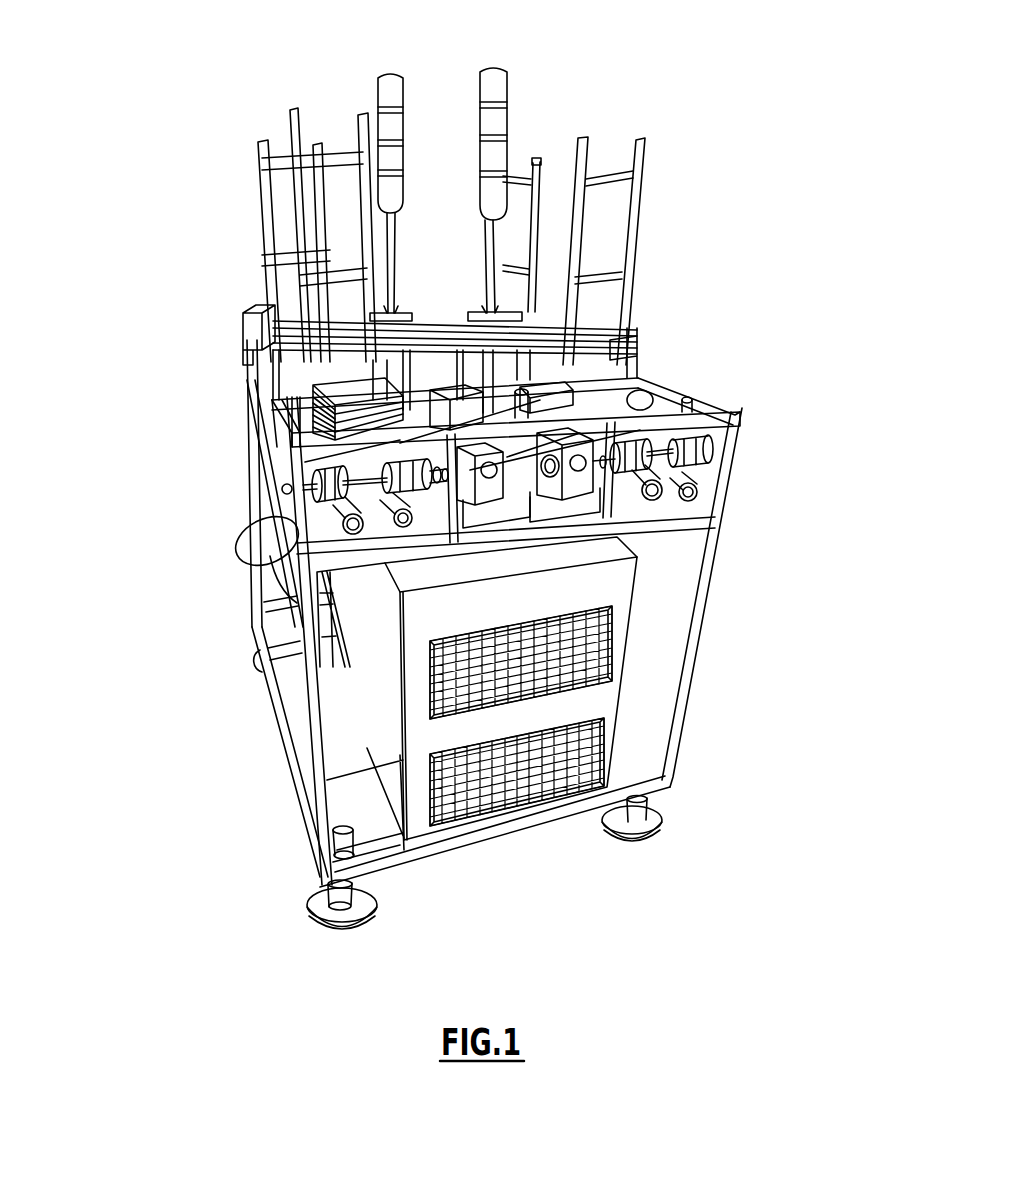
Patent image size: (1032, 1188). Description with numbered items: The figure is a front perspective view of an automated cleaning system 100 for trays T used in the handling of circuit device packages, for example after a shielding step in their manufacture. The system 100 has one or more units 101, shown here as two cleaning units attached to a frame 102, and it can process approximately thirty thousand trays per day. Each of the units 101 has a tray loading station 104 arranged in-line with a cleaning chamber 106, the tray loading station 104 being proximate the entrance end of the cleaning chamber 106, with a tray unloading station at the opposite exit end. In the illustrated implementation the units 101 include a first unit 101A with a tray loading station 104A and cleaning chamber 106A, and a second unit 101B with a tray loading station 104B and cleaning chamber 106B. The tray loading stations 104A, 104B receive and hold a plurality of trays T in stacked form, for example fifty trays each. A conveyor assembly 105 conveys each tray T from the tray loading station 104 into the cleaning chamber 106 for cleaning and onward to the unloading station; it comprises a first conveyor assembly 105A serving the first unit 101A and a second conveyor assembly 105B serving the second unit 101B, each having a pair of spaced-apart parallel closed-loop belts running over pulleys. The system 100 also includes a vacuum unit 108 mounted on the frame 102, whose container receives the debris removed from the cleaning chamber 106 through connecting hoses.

The automated cleaning system 100 is at (828, 73).
The units 101 is at (808, 226).
The first unit 101A is at (652, 214).
The second unit 101B is at (230, 201).
The frame 102 is at (688, 720).
The tray loading station 104 is at (150, 384).
The tray loading station 104A is at (752, 450).
The tray loading station 104B is at (232, 487).
The conveyor assembly 105 is at (790, 495).
The first conveyor assembly 105A is at (688, 474).
The second conveyor assembly 105B is at (333, 511).
The cleaning chamber 106 is at (115, 298).
The cleaning chamber 106A is at (647, 305).
The cleaning chamber 106B is at (220, 305).
The vacuum unit 108 is at (560, 712).
The tray T is at (330, 396).